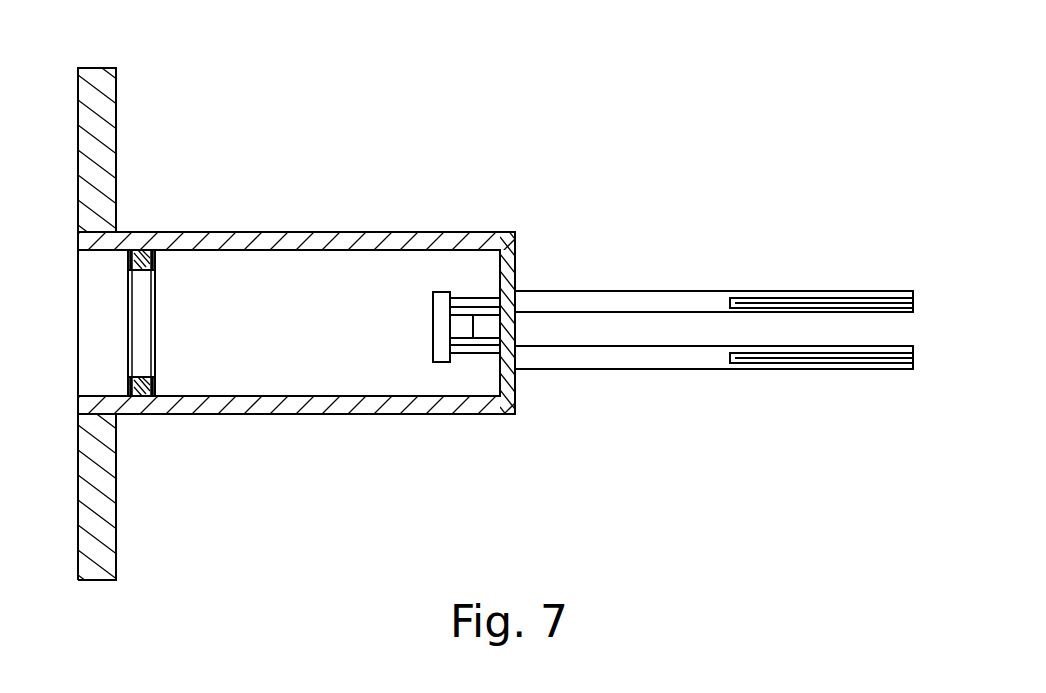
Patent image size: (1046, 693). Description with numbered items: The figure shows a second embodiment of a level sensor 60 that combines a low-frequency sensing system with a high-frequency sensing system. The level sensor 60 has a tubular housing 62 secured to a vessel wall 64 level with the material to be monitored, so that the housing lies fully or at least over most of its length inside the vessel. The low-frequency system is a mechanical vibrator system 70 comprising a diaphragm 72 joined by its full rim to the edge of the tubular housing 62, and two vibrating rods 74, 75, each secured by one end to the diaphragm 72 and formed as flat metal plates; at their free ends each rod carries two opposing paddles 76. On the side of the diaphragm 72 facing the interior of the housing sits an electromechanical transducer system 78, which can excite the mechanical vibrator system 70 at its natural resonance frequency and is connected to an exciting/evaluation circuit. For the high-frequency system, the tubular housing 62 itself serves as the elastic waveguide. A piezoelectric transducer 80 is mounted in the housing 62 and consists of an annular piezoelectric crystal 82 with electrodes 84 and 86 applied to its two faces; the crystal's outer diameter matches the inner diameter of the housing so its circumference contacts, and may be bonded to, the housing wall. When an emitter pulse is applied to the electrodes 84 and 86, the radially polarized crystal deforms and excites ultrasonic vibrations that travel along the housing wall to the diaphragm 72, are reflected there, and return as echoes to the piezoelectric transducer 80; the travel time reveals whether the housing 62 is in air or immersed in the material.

The level sensor 60 is at (578, 138).
The tubular housing 62 is at (390, 233).
The vessel wall 64 is at (118, 90).
The mechanical vibrator system 70 is at (695, 222).
The diaphragm 72 is at (515, 383).
The vibrating rod 74 is at (640, 292).
The vibrating rod 75 is at (658, 367).
The paddles 76 is at (827, 300).
The electromechanical transducer system 78 is at (400, 316).
The piezoelectric transducer 80 is at (181, 295).
The annular piezoelectric crystal 82 is at (143, 248).
The electrodes 84 is at (155, 378).
The electrodes 86 is at (127, 390).